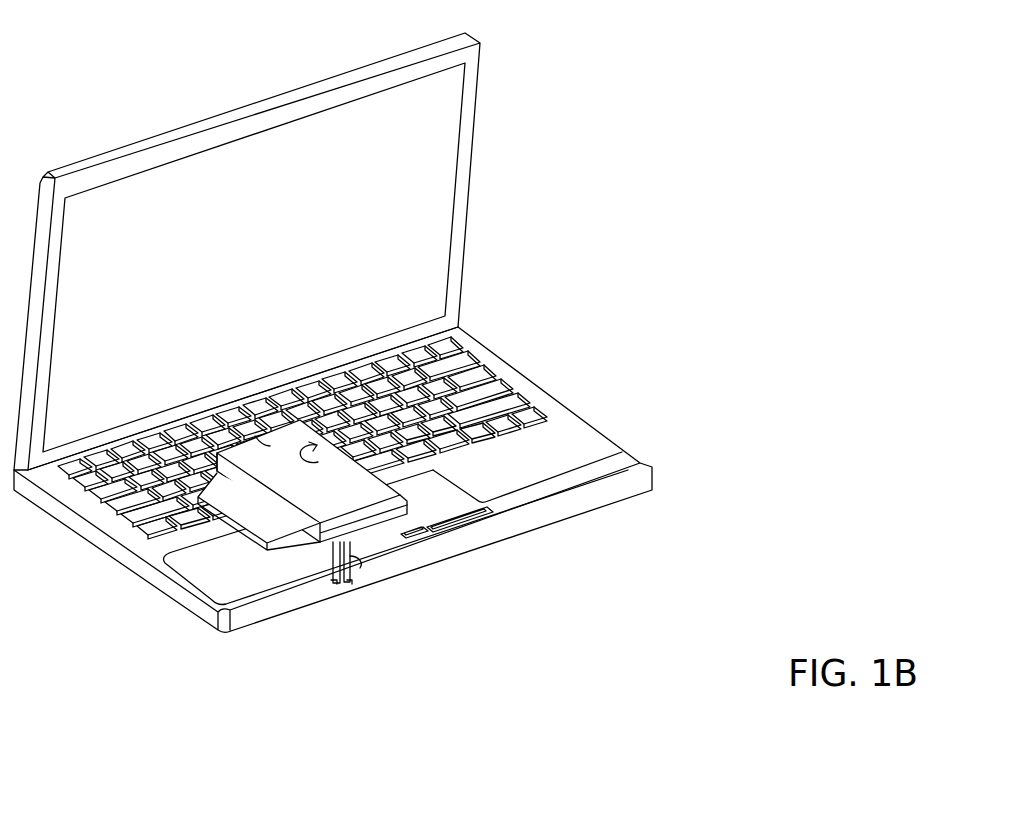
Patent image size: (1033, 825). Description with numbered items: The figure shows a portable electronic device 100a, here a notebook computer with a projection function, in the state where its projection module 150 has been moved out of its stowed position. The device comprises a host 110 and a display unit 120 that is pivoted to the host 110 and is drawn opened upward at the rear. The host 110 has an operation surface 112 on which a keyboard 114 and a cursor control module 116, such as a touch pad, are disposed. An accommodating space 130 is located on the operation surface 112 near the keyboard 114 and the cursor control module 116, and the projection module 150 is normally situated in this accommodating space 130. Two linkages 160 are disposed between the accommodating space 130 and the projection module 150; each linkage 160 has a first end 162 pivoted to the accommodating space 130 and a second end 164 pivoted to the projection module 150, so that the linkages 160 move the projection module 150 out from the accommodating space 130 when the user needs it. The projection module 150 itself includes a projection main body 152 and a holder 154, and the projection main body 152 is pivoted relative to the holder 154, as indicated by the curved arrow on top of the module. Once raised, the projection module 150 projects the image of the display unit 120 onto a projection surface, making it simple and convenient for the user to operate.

The portable electronic device 100a is at (385, 368).
The host 110 is at (385, 479).
The operation surface 112 is at (580, 430).
The keyboard 114 is at (497, 385).
The cursor control module 116 is at (443, 500).
The display unit 120 is at (428, 205).
The accommodating space 130 is at (238, 582).
The projection module 150 is at (419, 499).
The projection main body 152 is at (318, 510).
The holder 154 is at (287, 542).
The linkages 160 is at (380, 612).
The first end 162 is at (335, 590).
The second end 164 is at (352, 553).